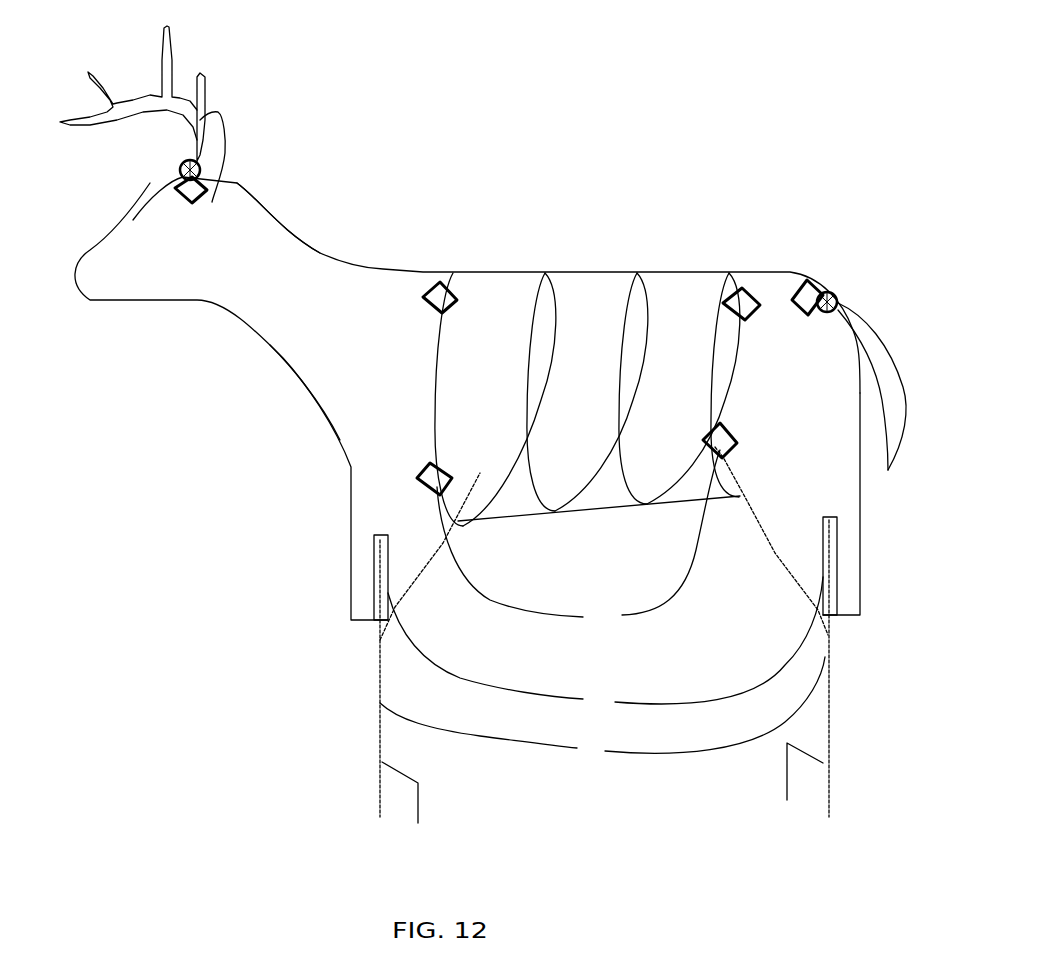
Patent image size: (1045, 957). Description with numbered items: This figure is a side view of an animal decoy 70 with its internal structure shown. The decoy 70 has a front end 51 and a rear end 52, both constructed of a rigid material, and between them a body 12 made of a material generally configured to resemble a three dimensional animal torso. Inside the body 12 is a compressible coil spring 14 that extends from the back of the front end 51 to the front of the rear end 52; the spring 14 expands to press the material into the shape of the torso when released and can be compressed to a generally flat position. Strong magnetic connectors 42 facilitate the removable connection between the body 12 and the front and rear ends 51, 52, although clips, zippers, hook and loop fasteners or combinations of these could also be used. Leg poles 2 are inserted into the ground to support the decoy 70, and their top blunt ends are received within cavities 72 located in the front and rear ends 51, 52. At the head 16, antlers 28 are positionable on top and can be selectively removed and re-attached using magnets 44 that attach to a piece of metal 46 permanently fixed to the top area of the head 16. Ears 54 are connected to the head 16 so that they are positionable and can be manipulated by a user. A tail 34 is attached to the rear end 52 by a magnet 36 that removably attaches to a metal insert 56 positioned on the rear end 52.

The leg poles 2 is at (602, 709).
The body 12 is at (577, 522).
The compressible coil spring 14 is at (533, 485).
The head 16 is at (237, 220).
The antlers 28 is at (178, 97).
The tail 34 is at (890, 387).
The magnet 36 is at (828, 294).
The magnetic connectors 42 is at (740, 297).
The magnets 44 is at (182, 163).
The piece of metal 46 is at (178, 186).
The front end 51 is at (327, 377).
The rear end 52 is at (837, 468).
The ears 54 is at (222, 154).
The metal insert 56 is at (808, 286).
The animal decoy 70 is at (765, 158).
The cavities 72 is at (605, 644).